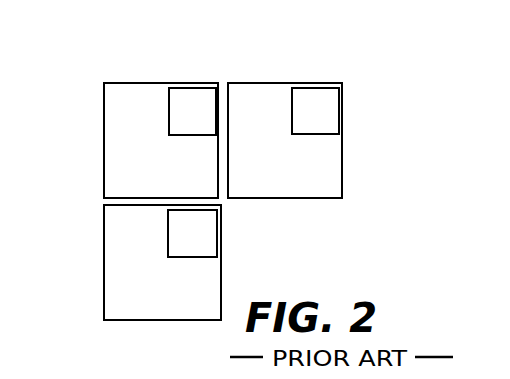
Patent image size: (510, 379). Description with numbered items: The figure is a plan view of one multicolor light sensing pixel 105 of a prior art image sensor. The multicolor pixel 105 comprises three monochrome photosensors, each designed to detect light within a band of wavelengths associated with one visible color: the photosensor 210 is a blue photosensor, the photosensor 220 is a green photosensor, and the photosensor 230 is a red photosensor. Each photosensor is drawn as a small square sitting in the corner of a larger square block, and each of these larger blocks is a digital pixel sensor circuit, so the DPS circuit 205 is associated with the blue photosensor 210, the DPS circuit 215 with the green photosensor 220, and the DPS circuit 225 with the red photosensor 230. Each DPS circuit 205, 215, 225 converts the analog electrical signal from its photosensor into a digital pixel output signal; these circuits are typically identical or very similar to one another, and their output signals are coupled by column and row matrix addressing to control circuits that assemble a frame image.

The multicolor light sensing pixel 105 is at (358, 279).
The digital pixel sensor circuit 205 is at (104, 265).
The blue photosensor 210 is at (200, 235).
The digital pixel sensor circuit 215 is at (122, 83).
The green photosensor 220 is at (205, 98).
The digital pixel sensor circuit 225 is at (245, 83).
The red photosensor 230 is at (328, 98).